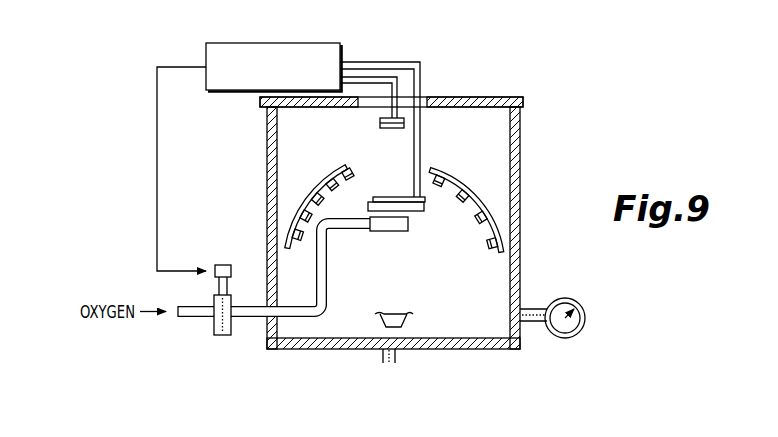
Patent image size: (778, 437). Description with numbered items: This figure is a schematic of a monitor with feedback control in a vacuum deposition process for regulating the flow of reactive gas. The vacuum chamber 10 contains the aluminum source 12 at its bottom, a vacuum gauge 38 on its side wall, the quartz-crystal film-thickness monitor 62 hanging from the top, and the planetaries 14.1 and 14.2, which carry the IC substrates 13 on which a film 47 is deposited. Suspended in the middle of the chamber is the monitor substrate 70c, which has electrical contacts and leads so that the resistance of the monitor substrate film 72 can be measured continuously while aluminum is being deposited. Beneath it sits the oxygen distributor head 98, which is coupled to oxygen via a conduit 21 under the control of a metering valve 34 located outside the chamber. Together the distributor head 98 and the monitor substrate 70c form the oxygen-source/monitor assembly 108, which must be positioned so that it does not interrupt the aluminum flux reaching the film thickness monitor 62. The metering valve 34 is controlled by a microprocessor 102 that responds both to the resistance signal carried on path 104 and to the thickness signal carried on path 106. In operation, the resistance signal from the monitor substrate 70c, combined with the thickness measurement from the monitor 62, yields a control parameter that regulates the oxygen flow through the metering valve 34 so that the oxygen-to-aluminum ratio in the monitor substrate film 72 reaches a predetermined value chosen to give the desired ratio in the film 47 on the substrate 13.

The vacuum chamber 10 is at (520, 172).
The microprocessor 102 is at (334, 45).
The path 104 is at (421, 75).
The path 106 is at (381, 78).
The quartz-crystal film-thickness monitor 62 is at (380, 124).
The planetary 14.1 is at (328, 179).
The IC substrate 13 is at (349, 172).
The planetary 14.2 is at (457, 179).
The film 47 is at (489, 250).
The monitor substrate 70c is at (389, 197).
The monitor substrate film 72 is at (368, 206).
The conduit 21 is at (250, 306).
The oxygen distributor head 98 is at (396, 232).
The oxygen-source/monitor assembly 108 is at (418, 219).
The metering valve 34 is at (223, 265).
The aluminum source 12 is at (413, 315).
The vacuum gauge 38 is at (577, 303).